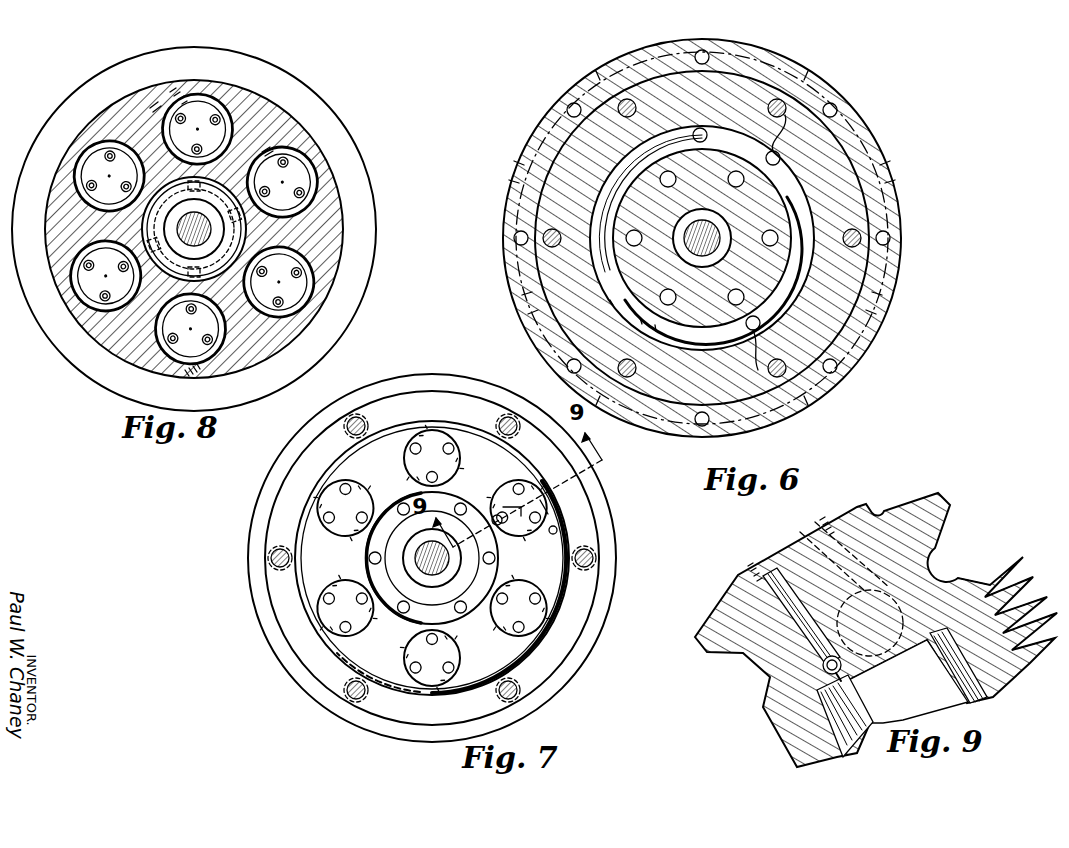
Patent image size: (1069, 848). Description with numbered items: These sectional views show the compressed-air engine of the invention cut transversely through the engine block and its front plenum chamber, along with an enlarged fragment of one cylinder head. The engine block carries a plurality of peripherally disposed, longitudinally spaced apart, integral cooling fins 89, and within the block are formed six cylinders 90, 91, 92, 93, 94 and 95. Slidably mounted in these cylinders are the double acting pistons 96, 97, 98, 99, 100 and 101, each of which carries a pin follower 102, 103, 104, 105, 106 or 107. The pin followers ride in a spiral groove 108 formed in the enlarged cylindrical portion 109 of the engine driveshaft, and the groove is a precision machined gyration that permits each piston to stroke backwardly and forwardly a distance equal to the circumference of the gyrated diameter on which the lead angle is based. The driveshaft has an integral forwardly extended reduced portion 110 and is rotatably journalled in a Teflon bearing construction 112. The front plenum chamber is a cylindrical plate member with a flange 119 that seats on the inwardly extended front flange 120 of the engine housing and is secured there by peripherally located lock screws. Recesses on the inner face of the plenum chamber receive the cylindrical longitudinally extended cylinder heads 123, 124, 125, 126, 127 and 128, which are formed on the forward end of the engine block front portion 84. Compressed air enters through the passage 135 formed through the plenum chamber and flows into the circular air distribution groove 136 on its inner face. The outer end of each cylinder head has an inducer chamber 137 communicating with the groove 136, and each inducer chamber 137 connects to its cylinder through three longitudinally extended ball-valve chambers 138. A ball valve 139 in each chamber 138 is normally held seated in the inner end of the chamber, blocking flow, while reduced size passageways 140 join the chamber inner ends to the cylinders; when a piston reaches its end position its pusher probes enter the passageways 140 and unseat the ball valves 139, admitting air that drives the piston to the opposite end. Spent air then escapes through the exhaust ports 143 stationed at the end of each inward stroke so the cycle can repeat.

In FIG. 9, the engine block front portion 84 is at (770, 727).
In FIG. 8, the cooling fins 89 is at (228, 47).
In FIG. 7, the cooling fins 89 is at (426, 374).
In FIG. 9, the cooling fins 89 is at (990, 575).
In FIG. 8, the cylinder 90 is at (246, 112).
In FIG. 8, the cylinder 91 is at (277, 167).
In FIG. 9, the cylinder 91 is at (970, 700).
In FIG. 8, the cylinder 92 is at (268, 345).
In FIG. 8, the cylinder 93 is at (233, 373).
In FIG. 8, the cylinder 94 is at (115, 338).
In FIG. 8, the cylinder 95 is at (160, 113).
In FIG. 8, the double acting piston 96 is at (157, 115).
In FIG. 8, the double acting piston 97 is at (267, 160).
In FIG. 8, the double acting piston 98 is at (283, 332).
In FIG. 8, the double acting piston 99 is at (220, 340).
In FIG. 8, the double acting piston 100 is at (143, 357).
In FIG. 8, the double acting piston 101 is at (116, 133).
In FIG. 8, the pin follower 102 is at (247, 198).
In FIG. 8, the pin follower 103 is at (280, 210).
In FIG. 8, the pin follower 104 is at (217, 278).
In FIG. 8, the pin follower 105 is at (183, 308).
In FIG. 8, the pin follower 106 is at (118, 256).
In FIG. 8, the pin follower 107 is at (145, 198).
In FIG. 8, the spiral groove 108 is at (180, 278).
In FIG. 8, the enlarged cylindrical portion 109 is at (143, 226).
In FIG. 8, the forwardly extended reduced portion 110 is at (215, 232).
In FIG. 6, the forwardly extended reduced portion 110 is at (704, 222).
In FIG. 7, the forwardly extended reduced portion 110 is at (415, 542).
In FIG. 7, the bearing construction 112 is at (457, 575).
In FIG. 6, the flange 119 is at (773, 42).
In FIG. 6, the front flange 120 is at (805, 66).
In FIG. 7, the cylinder head 123 is at (420, 468).
In FIG. 7, the cylinder head 124 is at (521, 506).
In FIG. 7, the cylinder head 125 is at (506, 619).
In FIG. 7, the cylinder head 126 is at (420, 665).
In FIG. 7, the cylinder head 127 is at (331, 619).
In FIG. 7, the cylinder head 128 is at (331, 515).
In FIG. 6, the passage 135 is at (707, 130).
In FIG. 6, the circular air distribution groove 136 is at (777, 156).
In FIG. 7, the inducer chamber 137 is at (548, 507).
In FIG. 7, the ball-valve chamber 138 is at (517, 485).
In FIG. 9, the ball-valve chamber 138 is at (812, 540).
In FIG. 7, the ball valve 139 is at (495, 518).
In FIG. 9, the ball valve 139 is at (817, 663).
In FIG. 9, the reduced size passageway 140 is at (843, 677).
In FIG. 8, the exhaust port 143 is at (177, 92).